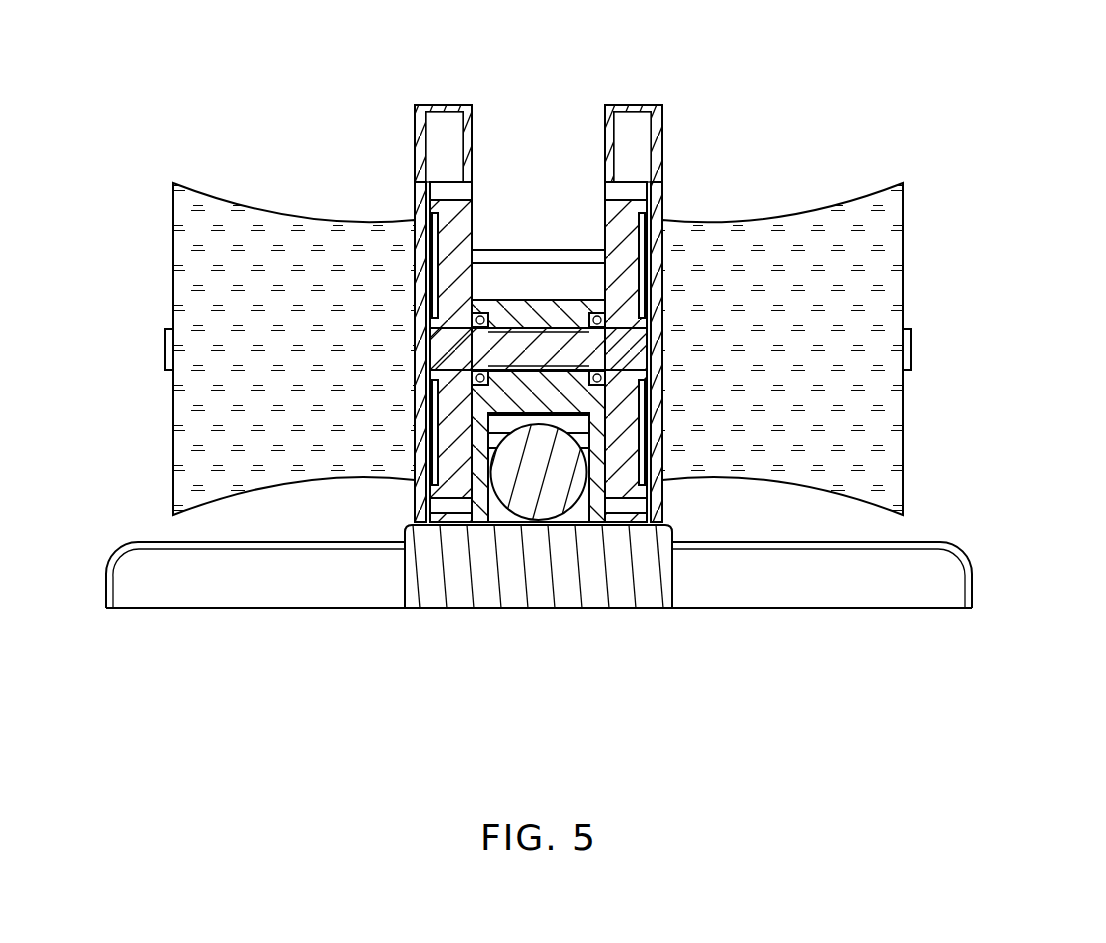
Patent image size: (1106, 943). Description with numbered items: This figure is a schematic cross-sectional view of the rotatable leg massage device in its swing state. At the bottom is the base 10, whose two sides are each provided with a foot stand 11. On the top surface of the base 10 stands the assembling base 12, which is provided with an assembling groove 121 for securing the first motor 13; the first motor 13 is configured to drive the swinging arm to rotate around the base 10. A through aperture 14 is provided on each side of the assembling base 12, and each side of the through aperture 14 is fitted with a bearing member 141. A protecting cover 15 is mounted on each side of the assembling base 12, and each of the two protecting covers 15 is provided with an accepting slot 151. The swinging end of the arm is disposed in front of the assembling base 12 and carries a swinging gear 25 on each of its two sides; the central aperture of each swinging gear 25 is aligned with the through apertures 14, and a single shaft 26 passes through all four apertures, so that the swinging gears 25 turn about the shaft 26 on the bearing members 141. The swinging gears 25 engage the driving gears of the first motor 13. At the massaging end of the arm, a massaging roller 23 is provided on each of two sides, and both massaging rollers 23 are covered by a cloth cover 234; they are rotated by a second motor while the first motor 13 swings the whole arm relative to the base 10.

The base 10 is at (599, 599).
The foot stand 11 is at (853, 585).
The assembling base 12 is at (488, 269).
The assembling groove 121 is at (573, 512).
The first motor 13 is at (527, 490).
The through aperture 14 is at (568, 441).
The bearing member 141 is at (480, 310).
The protecting cover 15 is at (543, 99).
The accepting slot 151 is at (632, 170).
The massaging roller 23 is at (581, 314).
The cloth cover 234 is at (278, 258).
The swinging gear 25 is at (442, 206).
The shaft 26 is at (525, 338).